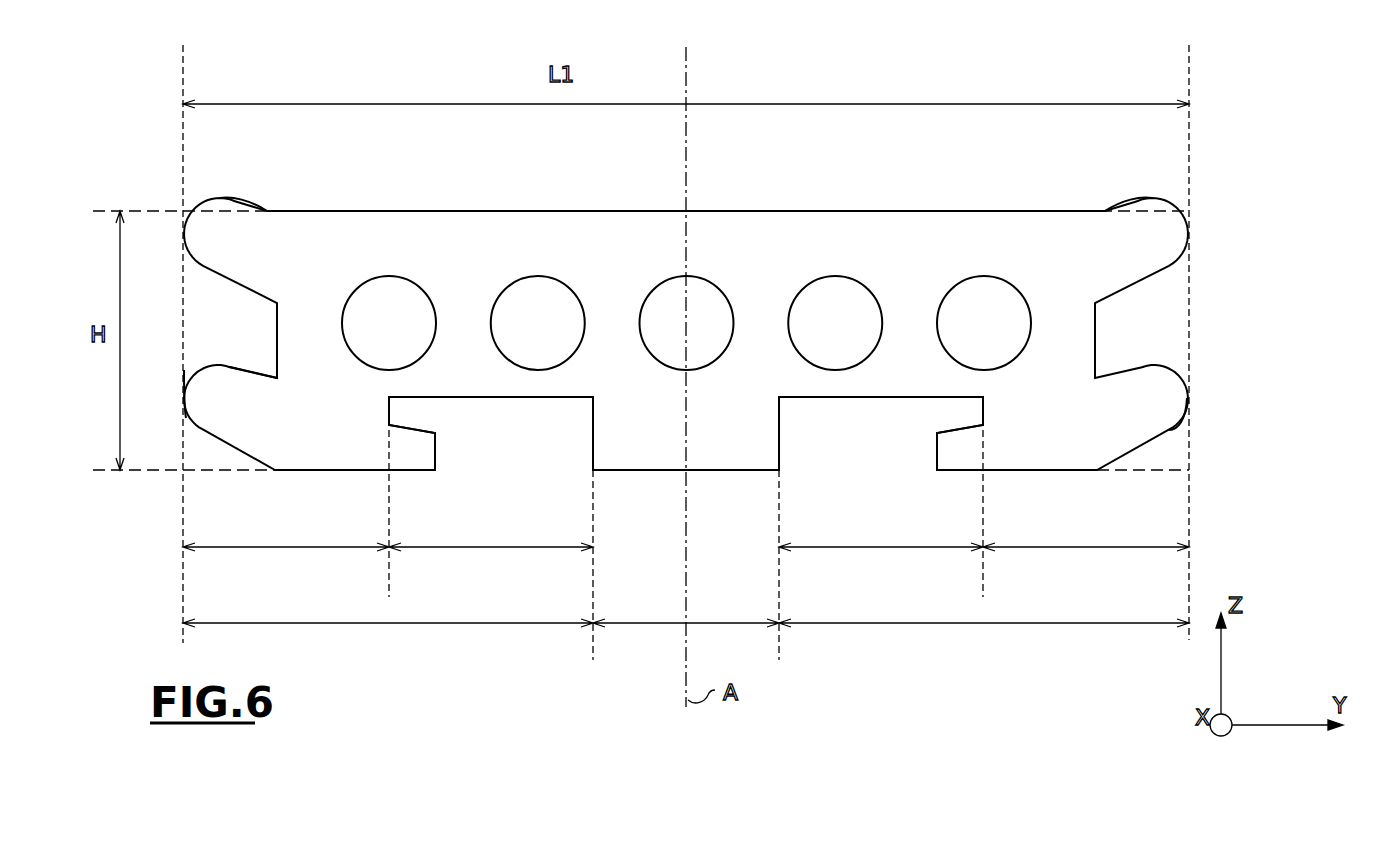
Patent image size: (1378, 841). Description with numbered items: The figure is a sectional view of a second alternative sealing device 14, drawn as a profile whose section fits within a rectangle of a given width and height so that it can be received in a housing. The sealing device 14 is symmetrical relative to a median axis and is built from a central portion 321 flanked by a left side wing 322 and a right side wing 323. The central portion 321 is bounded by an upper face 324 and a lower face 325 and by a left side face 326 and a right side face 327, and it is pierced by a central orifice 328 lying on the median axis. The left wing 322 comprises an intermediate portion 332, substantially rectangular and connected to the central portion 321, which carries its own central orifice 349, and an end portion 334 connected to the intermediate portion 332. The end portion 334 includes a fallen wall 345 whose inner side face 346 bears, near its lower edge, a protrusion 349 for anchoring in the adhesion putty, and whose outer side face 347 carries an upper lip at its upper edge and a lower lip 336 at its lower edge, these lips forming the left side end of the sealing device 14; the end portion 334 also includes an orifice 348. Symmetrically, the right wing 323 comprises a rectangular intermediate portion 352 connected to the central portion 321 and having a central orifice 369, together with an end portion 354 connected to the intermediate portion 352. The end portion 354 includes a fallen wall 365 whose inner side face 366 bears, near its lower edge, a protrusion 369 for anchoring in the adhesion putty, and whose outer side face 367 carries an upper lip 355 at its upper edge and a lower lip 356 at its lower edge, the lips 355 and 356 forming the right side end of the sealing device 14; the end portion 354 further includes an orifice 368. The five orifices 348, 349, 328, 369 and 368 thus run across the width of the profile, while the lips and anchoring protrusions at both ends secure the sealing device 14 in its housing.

The sealing device 14 is at (853, 60).
The central portion 321 is at (663, 625).
The left side wing 322 is at (440, 625).
The right side wing 323 is at (957, 625).
The upper face 324 is at (724, 211).
The lower face 325 is at (717, 473).
The left side face 326 is at (593, 432).
The right side face 327 is at (783, 425).
The central orifice 328 is at (652, 290).
The intermediate portion 332 is at (525, 548).
The end portion 334 is at (270, 548).
The lower lip 336 is at (196, 408).
The fallen wall 345 is at (310, 370).
The inner side face 346 is at (389, 412).
The outer side face 347 is at (277, 323).
The orifice 348 is at (380, 278).
The central orifice / protrusion 349 is at (523, 278).
The intermediate portion 352 is at (930, 550).
The end portion 354 is at (1130, 548).
The upper lip 355 is at (213, 197).
The lower lip 356 is at (1185, 432).
The fallen wall 365 is at (1070, 352).
The inner side face 366 is at (983, 412).
The outer side face 367 is at (1095, 330).
The orifice 368 is at (1005, 280).
The central orifice / protrusion 369 is at (866, 286).